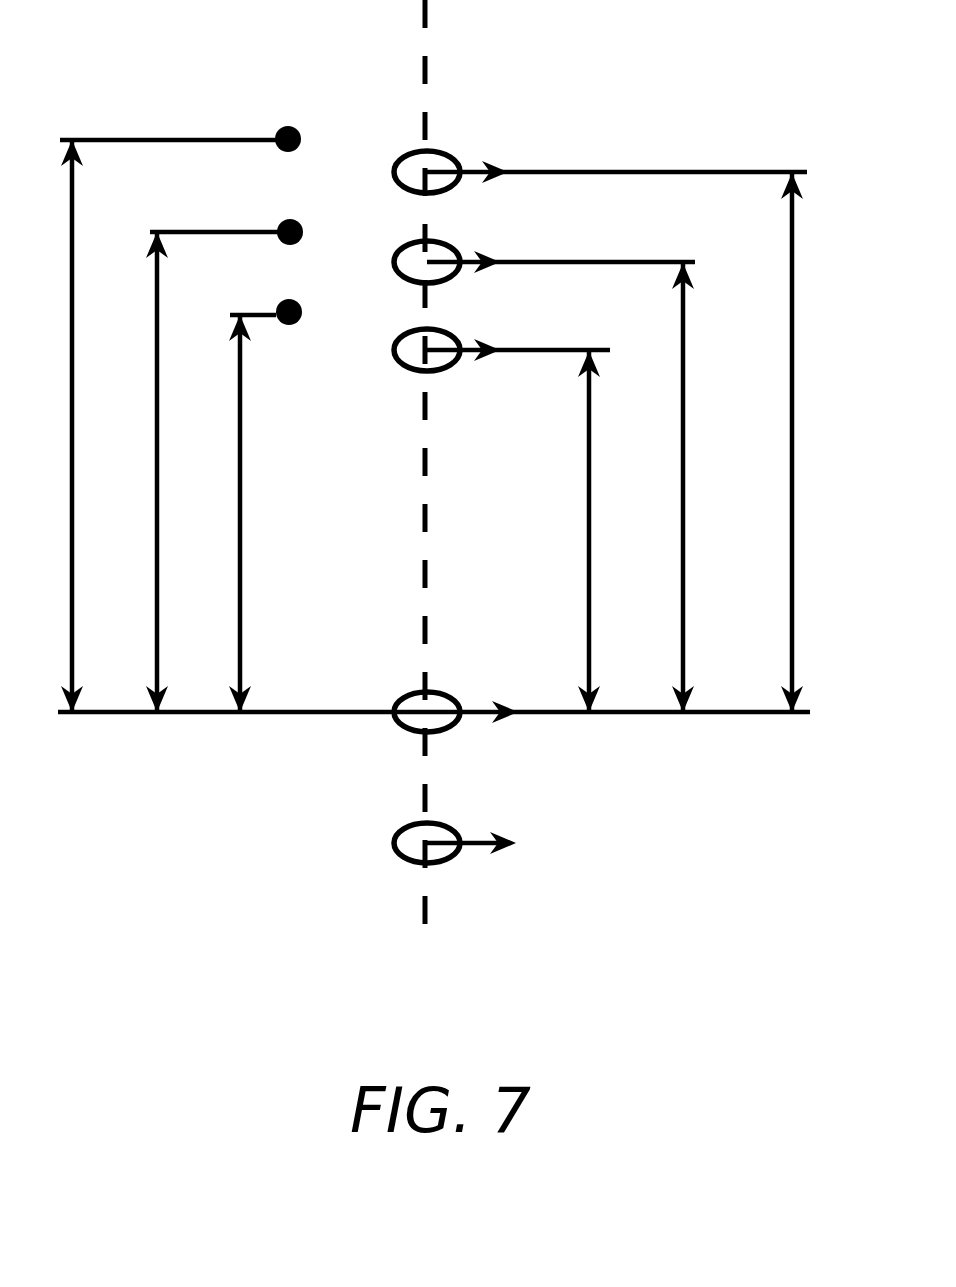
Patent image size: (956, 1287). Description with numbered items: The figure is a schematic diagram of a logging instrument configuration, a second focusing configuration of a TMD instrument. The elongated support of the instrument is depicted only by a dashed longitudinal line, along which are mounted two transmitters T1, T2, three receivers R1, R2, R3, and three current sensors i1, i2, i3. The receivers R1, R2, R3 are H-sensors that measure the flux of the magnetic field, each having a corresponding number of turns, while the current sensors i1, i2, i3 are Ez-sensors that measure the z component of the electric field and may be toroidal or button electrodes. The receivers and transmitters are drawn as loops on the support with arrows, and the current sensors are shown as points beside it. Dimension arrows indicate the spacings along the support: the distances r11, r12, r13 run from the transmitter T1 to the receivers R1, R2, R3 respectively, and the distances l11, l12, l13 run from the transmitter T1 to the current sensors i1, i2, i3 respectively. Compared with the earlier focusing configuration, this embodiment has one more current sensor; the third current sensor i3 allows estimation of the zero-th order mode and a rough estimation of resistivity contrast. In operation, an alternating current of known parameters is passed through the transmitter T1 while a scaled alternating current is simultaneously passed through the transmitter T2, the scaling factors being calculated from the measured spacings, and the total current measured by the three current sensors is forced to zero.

The first receiver R1 is at (563, 145).
The second receiver R2 is at (507, 235).
The third receiver R3 is at (465, 323).
The first transmitter T1 is at (434, 746).
The second transmitter T2 is at (489, 874).
The first current sensor i1 is at (180, 112).
The second current sensor i2 is at (226, 205).
The third current sensor i3 is at (254, 286).
The distance between first transmitter and first current sensor l11 is at (109, 426).
The distance between first transmitter and second current sensor l12 is at (191, 472).
The distance between first transmitter and third current sensor l13 is at (276, 513).
The distance between first transmitter and first receiver r11 is at (827, 442).
The distance between first transmitter and second receiver r12 is at (719, 487).
The distance between first transmitter and third receiver r13 is at (625, 531).